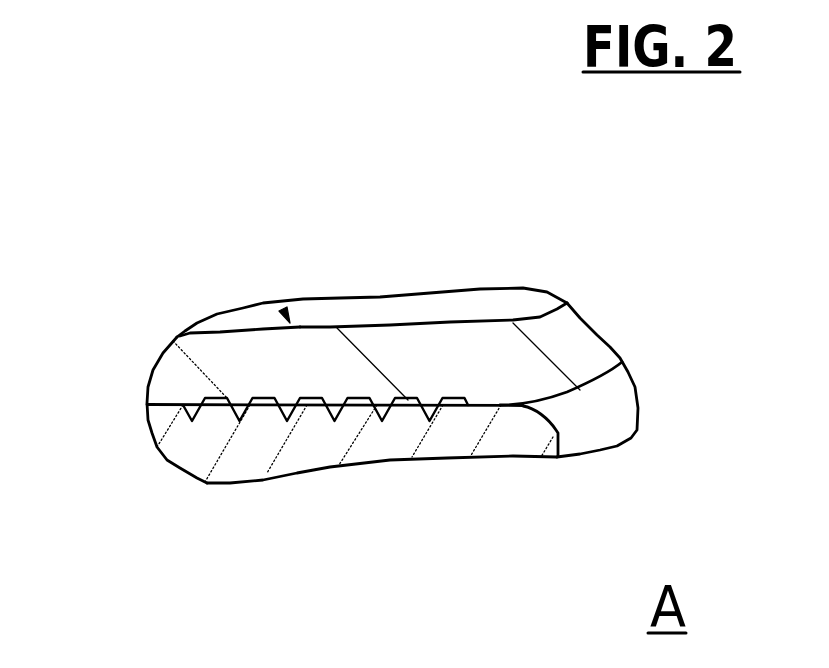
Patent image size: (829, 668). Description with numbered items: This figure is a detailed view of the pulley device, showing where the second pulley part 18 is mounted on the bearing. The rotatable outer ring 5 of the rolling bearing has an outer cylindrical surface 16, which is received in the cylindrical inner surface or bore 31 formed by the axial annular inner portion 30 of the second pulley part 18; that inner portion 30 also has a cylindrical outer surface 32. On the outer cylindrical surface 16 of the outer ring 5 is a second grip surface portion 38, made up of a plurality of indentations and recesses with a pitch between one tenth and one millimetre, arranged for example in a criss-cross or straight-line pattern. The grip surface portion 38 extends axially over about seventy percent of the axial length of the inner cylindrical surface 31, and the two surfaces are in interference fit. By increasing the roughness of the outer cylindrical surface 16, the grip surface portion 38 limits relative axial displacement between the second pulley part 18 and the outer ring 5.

The outer ring 5 is at (380, 450).
The outer cylindrical surface 16 is at (155, 390).
The second pulley part 18 is at (283, 309).
The axial annular inner portion 30 is at (377, 333).
The cylindrical inner surface 31 is at (500, 407).
The cylindrical outer surface 32 is at (255, 330).
The second grip surface portion 38 is at (403, 398).